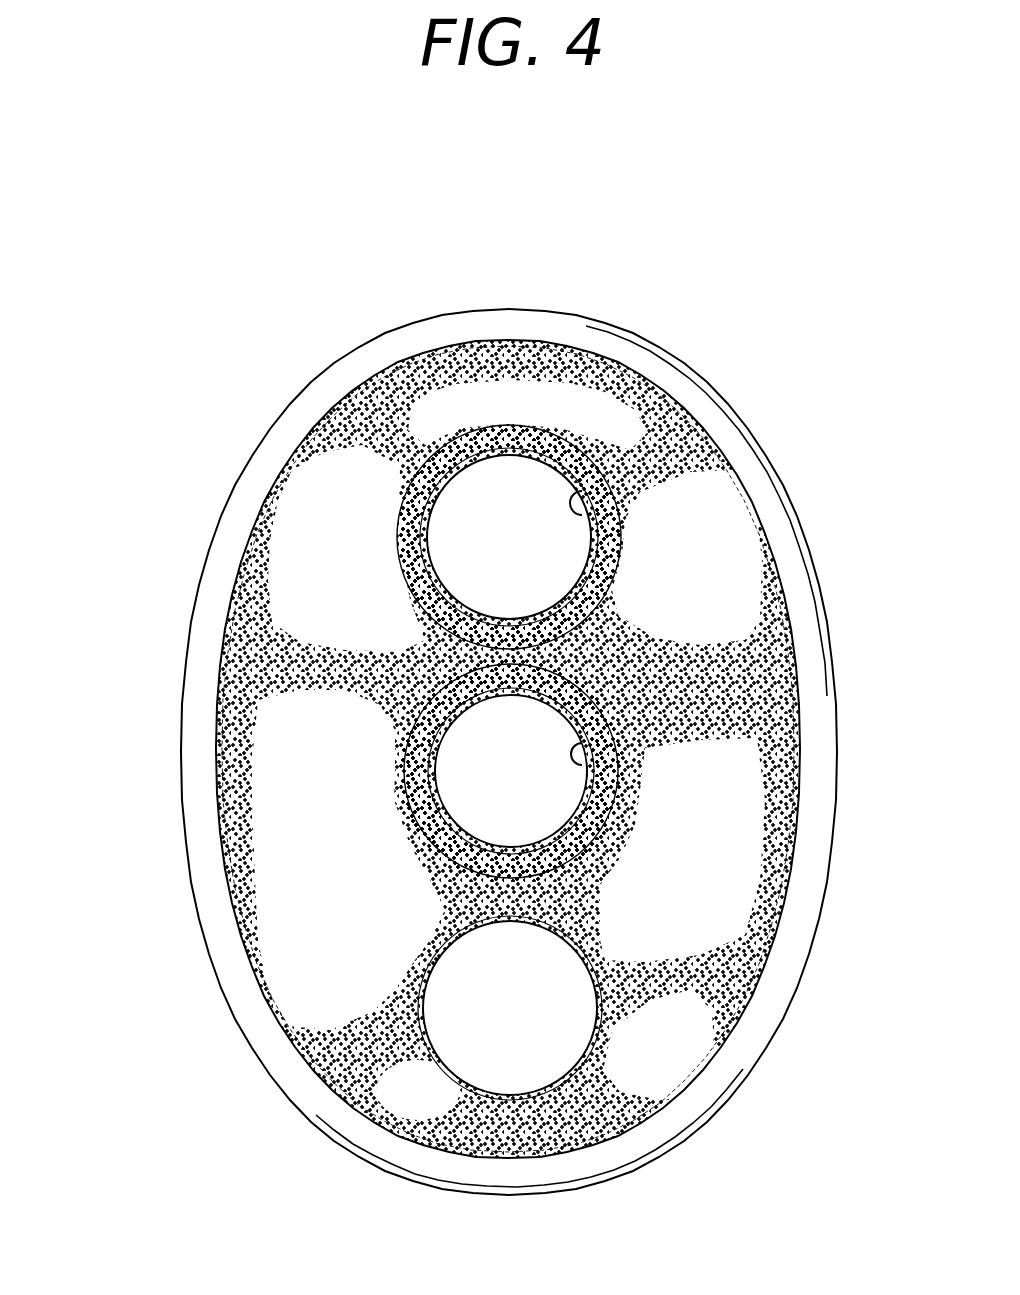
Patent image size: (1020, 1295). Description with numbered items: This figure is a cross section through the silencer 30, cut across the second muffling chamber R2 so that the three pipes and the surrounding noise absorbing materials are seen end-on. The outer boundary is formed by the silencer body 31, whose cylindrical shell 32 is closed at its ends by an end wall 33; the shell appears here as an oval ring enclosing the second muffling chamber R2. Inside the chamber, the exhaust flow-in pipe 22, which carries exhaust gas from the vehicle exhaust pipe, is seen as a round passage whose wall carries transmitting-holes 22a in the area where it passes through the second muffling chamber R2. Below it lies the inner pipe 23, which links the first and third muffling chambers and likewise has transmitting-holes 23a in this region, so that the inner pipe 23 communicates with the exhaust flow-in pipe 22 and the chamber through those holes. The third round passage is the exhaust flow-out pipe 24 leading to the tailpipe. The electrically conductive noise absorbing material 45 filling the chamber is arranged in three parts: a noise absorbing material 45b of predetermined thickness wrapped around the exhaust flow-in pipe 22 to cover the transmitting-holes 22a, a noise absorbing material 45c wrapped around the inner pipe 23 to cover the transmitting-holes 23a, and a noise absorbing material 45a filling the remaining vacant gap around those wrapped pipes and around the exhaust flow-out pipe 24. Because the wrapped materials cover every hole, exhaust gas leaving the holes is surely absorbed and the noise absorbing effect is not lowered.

The silencer 30 is at (722, 350).
The silencer body 31 is at (343, 357).
The cylindrical shell 32 is at (440, 348).
The end wall 33 is at (510, 330).
The exhaust flow-in pipe 22 is at (580, 580).
The transmitting-holes 22a is at (585, 492).
The inner pipe 23 is at (623, 805).
The transmitting-holes 23a is at (590, 746).
The exhaust flow-out pipe 24 is at (595, 1033).
The electrically conductive noise absorbing material 45 is at (115, 412).
The noise absorbing material 45a is at (280, 473).
The electrically conductive noise absorbing material 45b is at (395, 563).
The electrically conductive noise absorbing material 45c is at (407, 710).
The second muffling chamber R2 is at (790, 682).